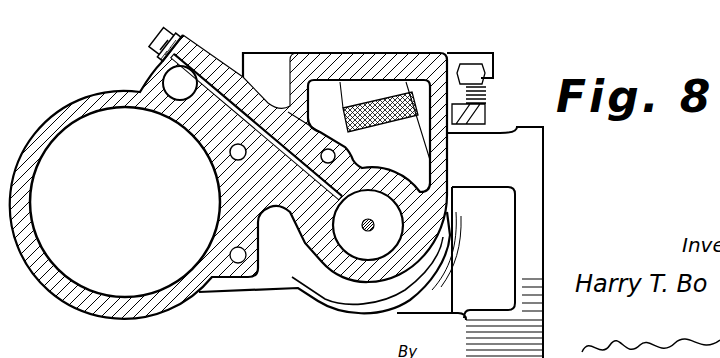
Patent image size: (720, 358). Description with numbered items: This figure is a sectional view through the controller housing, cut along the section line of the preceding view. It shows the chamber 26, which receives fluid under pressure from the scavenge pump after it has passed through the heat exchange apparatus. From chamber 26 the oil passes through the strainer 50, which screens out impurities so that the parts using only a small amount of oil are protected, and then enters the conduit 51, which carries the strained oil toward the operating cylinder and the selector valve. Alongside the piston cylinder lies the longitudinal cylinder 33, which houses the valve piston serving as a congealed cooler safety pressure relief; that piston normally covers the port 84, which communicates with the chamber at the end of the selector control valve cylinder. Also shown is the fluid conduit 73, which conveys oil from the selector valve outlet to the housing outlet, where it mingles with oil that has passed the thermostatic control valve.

The chamber 26 is at (372, 86).
The longitudinal cylinder 33 is at (185, 78).
The strainer 50 is at (395, 122).
The conduit 51 is at (234, 153).
The fluid conduit 73 is at (330, 156).
The port 84 is at (226, 112).